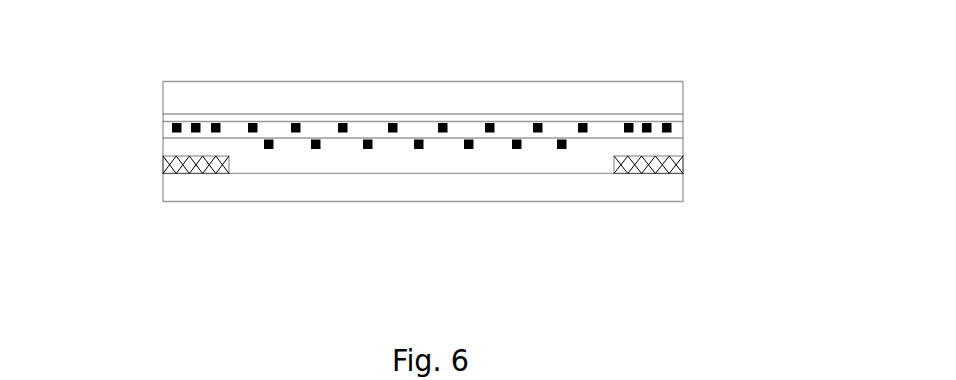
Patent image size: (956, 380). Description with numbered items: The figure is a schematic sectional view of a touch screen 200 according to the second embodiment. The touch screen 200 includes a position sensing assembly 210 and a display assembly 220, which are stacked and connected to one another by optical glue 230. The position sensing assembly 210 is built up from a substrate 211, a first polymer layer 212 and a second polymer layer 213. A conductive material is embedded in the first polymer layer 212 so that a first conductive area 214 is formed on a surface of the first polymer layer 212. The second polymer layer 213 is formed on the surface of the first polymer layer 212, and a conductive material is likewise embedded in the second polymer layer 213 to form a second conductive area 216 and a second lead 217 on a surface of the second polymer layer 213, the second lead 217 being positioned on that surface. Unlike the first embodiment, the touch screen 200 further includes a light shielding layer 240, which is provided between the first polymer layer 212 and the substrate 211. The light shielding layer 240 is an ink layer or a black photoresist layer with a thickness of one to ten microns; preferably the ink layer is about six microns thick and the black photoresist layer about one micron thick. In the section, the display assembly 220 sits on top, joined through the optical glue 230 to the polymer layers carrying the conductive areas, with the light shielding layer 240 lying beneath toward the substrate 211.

The touch screen 200 is at (360, 40).
The position sensing assembly 210 is at (538, 127).
The substrate 211 is at (683, 186).
The first polymer layer 212 is at (163, 158).
The second polymer layer 213 is at (163, 132).
The first conductive area 214 is at (420, 147).
The second conductive area 216 is at (392, 125).
The second lead 217 is at (193, 124).
The display assembly 220 is at (586, 90).
The optical glue 230 is at (683, 118).
The light shielding layer 240 is at (683, 165).